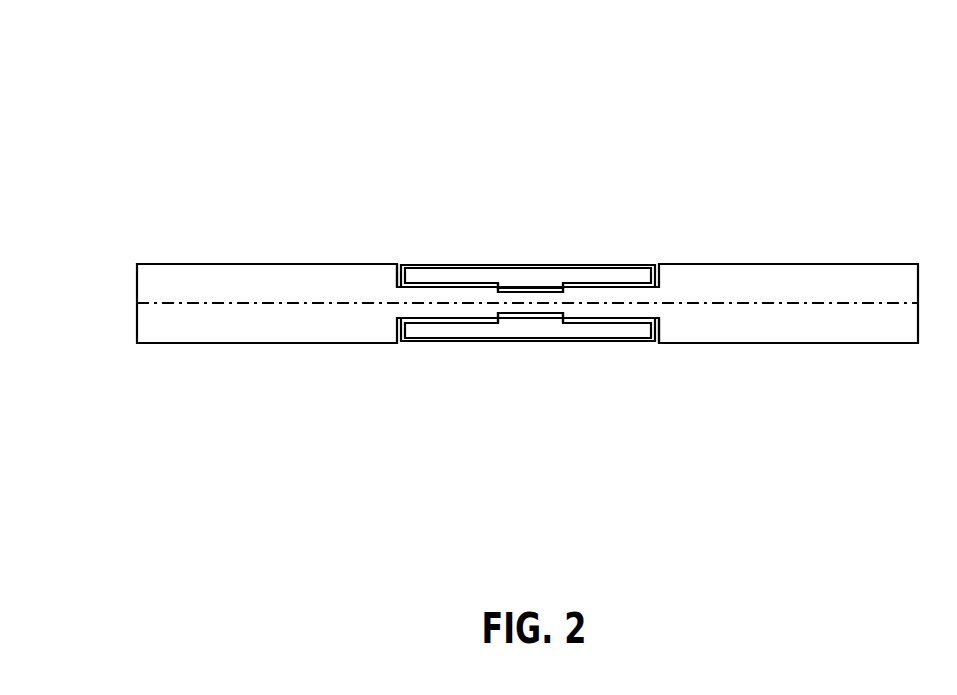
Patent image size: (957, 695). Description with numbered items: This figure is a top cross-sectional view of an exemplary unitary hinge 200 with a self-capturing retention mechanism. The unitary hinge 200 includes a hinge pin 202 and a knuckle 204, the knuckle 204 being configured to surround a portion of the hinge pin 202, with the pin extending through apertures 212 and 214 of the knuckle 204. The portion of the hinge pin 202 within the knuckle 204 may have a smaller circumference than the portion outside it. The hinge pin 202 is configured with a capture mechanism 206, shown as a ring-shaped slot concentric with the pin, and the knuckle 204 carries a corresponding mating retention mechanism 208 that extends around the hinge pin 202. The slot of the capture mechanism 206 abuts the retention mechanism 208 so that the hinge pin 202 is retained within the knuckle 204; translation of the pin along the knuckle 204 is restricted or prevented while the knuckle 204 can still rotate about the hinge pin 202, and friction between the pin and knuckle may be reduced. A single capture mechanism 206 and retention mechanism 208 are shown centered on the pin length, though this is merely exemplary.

The unitary hinge 200 is at (222, 86).
The hinge pin 202 is at (803, 286).
The knuckle 204 is at (450, 272).
The capture mechanism 206 is at (536, 289).
The retention mechanism 208 is at (538, 324).
The aperture 212 is at (400, 279).
The aperture 214 is at (658, 323).